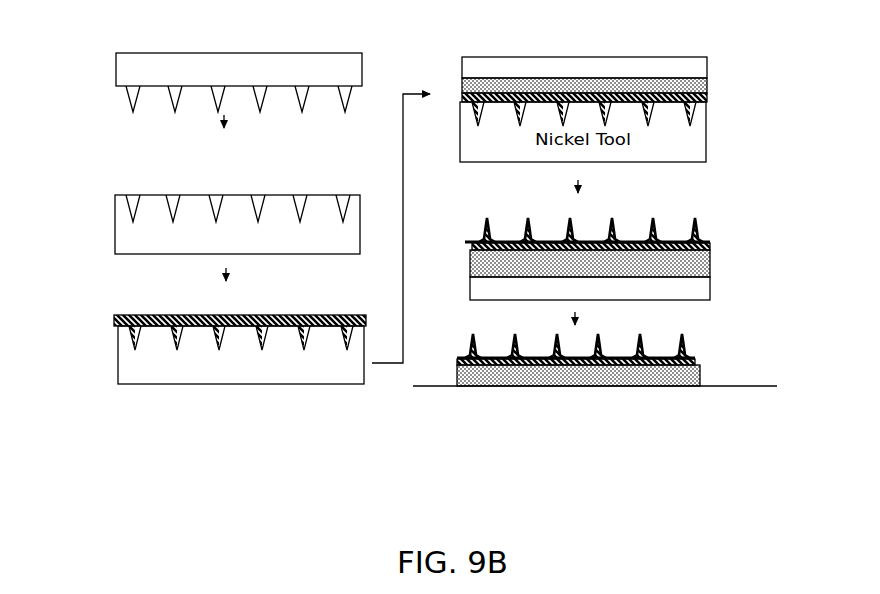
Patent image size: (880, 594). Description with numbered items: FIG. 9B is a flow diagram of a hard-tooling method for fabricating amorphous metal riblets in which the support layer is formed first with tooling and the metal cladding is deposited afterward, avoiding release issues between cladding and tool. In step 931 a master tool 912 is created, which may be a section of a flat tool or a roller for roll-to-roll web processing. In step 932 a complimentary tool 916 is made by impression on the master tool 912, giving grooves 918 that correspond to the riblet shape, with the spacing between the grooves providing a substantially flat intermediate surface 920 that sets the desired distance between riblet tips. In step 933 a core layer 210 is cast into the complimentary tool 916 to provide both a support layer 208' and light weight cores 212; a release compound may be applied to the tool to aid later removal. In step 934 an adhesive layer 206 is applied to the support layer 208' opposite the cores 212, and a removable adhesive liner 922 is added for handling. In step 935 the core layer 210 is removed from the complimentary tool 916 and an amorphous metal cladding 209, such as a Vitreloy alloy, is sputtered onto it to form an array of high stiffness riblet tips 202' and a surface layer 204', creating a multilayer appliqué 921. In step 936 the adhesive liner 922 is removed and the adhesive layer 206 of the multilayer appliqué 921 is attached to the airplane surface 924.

The master tool 912 is at (281, 50).
The complimentary tool 916 is at (232, 208).
The grooves 918 is at (157, 194).
The intermediate surface 920 is at (218, 194).
The support layer 208' is at (241, 319).
The core layer 210 is at (444, 238).
The light weight cores 212 is at (306, 336).
The removable adhesive liner 922 is at (667, 57).
The adhesive layer 206 is at (704, 83).
The amorphous metal film or cladding 209 is at (712, 243).
The surface layer 204' is at (636, 272).
The riblet tips 202' is at (589, 277).
The multilayer appliqué 921 is at (468, 278).
The airplane surface 924 is at (715, 388).
The step of creating master tool 931 is at (70, 75).
The step of creating complimentary tool 932 is at (70, 188).
The step of casting core layer 933 is at (62, 350).
The step of applying adhesive layer and liner 934 is at (793, 123).
The step of removing core layer and depositing cladding 935 is at (807, 258).
The step of applying appliqué to aircraft surface 936 is at (804, 365).